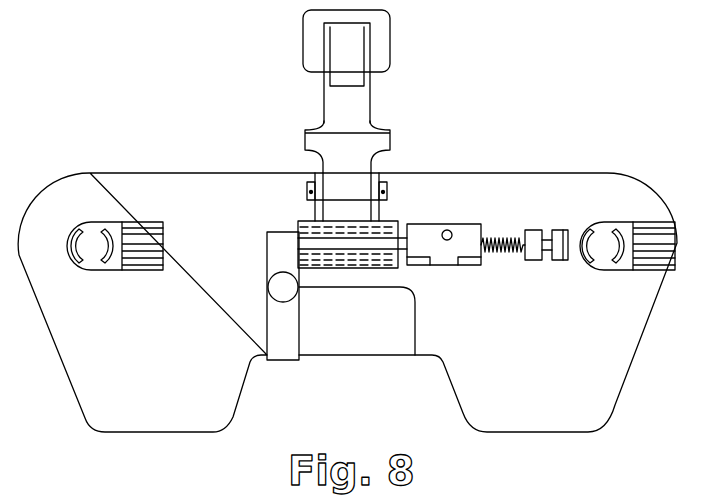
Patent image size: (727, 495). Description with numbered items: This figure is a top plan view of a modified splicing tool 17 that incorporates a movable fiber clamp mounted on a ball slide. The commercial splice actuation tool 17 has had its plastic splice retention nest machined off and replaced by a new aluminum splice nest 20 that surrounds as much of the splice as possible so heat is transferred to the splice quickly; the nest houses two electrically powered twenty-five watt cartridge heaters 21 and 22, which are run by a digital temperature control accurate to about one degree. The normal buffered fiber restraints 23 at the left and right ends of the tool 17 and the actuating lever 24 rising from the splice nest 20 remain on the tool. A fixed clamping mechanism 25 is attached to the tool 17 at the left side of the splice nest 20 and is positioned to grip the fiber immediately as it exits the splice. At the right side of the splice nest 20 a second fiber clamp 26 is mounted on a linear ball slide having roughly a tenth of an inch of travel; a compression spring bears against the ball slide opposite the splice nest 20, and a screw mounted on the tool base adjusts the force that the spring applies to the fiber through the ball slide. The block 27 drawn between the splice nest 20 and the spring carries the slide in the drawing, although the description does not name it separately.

The splice actuation tool 17 is at (173, 168).
The splice nest 20 is at (295, 213).
The cartridge heater 21 is at (392, 217).
The cartridge heater 22 is at (348, 263).
The buffered fiber restraints 23 is at (123, 282).
The actuating lever 24 is at (391, 44).
The fixed clamping mechanism 25 is at (263, 250).
The second fiber clamp 26 is at (505, 250).
The adjustment block 27 is at (442, 267).